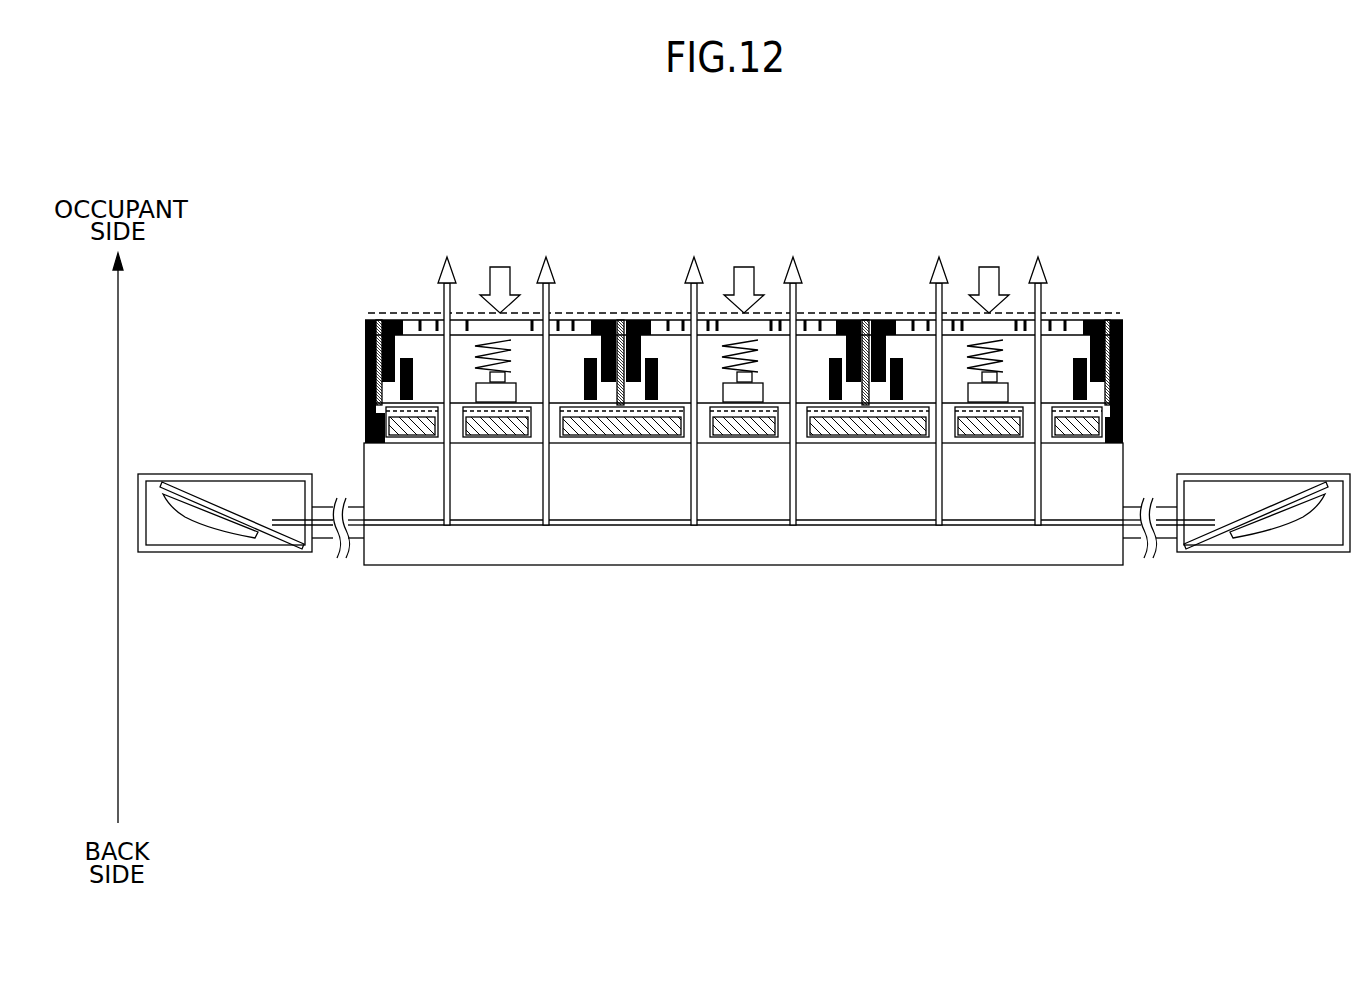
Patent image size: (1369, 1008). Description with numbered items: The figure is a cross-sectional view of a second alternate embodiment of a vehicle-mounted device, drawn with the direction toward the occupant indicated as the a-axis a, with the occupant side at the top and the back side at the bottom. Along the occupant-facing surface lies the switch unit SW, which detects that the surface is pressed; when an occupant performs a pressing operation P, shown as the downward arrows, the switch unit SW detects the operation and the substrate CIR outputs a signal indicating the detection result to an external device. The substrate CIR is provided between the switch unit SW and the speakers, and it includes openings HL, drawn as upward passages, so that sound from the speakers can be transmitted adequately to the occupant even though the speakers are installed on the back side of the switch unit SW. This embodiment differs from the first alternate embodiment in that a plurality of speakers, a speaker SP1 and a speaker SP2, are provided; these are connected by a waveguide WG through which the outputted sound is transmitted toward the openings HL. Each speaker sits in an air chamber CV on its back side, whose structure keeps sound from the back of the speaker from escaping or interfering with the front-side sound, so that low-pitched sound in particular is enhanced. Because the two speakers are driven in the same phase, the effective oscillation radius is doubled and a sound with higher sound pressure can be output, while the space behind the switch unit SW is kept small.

The pressing operation P is at (500, 265).
The switch unit SW is at (588, 312).
The opening HL is at (450, 443).
The substrate CIR is at (1107, 418).
The speaker SP1 is at (1266, 507).
The speaker SP2 is at (215, 507).
The air chamber CV is at (168, 533).
The waveguide WG is at (325, 533).
The a-axis a is at (113, 537).